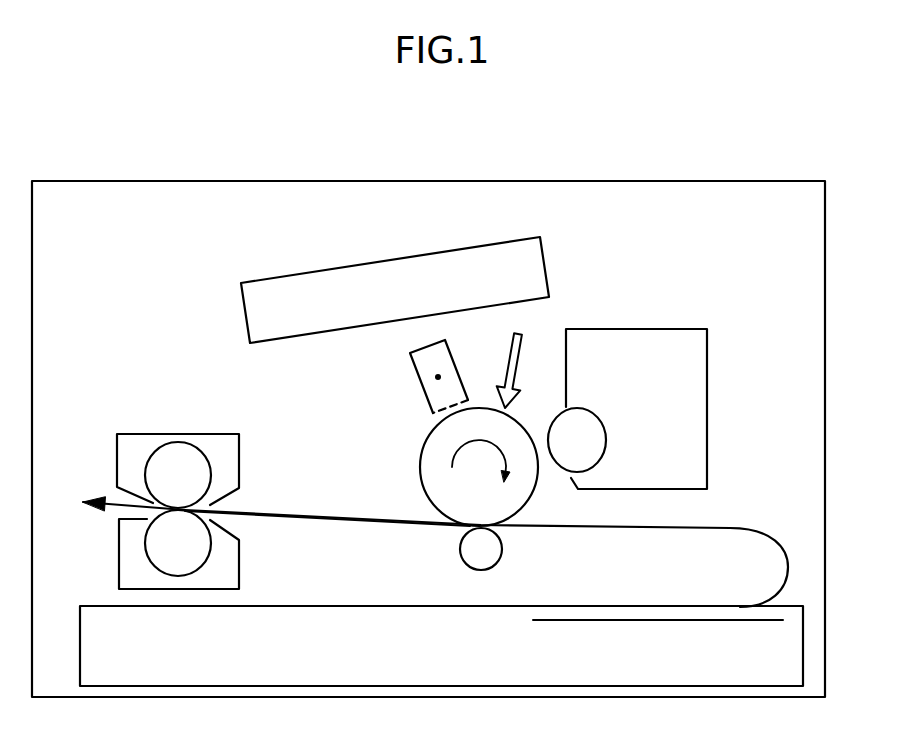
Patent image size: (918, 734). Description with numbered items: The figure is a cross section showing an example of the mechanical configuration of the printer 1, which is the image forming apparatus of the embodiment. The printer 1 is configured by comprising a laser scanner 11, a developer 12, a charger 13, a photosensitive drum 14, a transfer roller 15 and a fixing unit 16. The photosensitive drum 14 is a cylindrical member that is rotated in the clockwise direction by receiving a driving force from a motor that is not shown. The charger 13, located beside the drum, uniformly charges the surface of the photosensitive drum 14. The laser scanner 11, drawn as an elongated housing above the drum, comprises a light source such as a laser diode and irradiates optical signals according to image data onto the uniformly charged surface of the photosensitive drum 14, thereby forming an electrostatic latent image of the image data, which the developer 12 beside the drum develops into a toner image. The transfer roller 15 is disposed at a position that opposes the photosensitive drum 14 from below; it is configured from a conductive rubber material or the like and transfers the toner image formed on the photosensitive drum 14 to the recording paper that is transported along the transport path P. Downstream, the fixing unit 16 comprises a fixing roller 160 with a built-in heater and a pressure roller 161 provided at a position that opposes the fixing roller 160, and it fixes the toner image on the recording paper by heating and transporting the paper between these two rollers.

The printer 1 is at (577, 181).
The laser scanner 11 is at (340, 264).
The developer 12 is at (620, 329).
The charger 13 is at (423, 394).
The photosensitive drum 14 is at (425, 497).
The transfer roller 15 is at (502, 549).
The fixing unit 16 is at (145, 473).
The fixing roller 160 is at (147, 472).
The pressure roller 161 is at (147, 556).
The transport path P is at (735, 527).